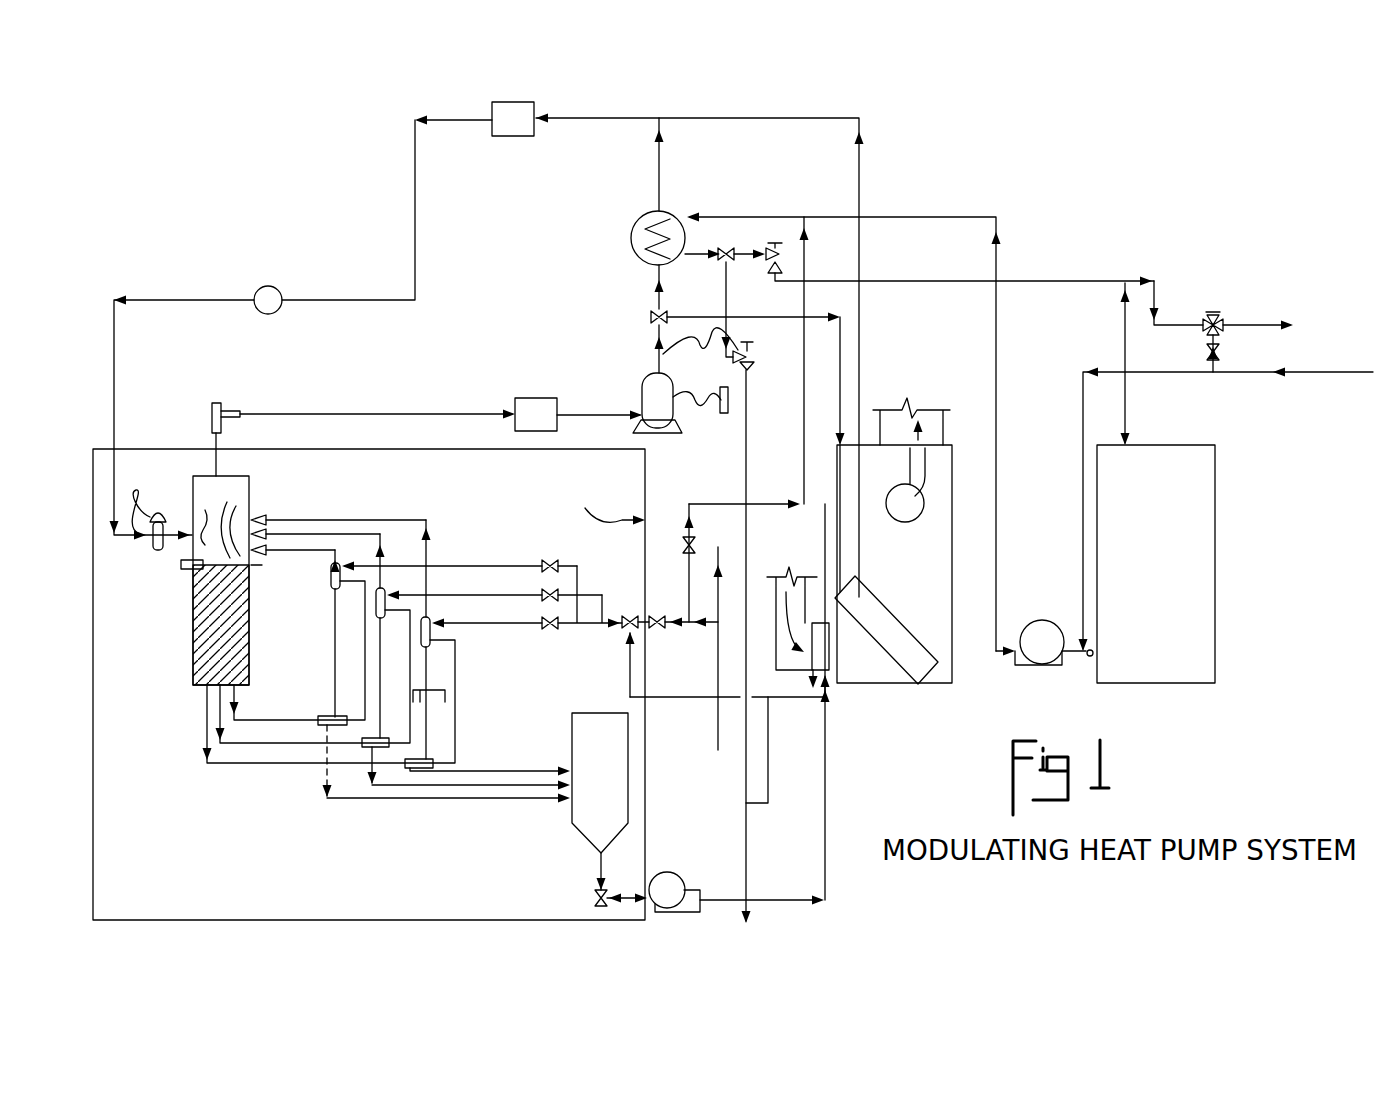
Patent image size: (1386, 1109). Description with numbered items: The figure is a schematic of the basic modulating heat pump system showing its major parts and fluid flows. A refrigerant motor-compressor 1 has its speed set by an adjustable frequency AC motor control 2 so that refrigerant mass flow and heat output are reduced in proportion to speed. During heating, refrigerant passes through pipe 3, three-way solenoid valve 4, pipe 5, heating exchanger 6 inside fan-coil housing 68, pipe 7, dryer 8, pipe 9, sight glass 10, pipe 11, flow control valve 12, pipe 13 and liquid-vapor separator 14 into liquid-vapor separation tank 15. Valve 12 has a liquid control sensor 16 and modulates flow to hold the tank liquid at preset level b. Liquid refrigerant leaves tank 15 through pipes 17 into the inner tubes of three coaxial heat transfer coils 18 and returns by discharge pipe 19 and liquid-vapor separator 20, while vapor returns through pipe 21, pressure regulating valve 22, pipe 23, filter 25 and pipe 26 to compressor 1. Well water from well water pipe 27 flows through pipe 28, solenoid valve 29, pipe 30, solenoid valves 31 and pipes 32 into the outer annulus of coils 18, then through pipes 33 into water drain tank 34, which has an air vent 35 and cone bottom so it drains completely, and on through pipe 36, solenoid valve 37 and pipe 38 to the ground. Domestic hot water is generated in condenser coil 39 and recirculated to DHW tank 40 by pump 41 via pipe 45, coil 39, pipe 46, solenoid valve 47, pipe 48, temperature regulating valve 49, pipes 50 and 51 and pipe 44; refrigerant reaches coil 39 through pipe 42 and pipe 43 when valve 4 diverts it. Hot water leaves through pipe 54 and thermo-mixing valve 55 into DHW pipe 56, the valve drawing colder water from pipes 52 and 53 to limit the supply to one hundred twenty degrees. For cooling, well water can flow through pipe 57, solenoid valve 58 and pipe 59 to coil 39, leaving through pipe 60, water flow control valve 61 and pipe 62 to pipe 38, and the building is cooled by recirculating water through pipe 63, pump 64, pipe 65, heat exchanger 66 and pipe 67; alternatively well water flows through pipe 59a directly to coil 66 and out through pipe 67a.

The refrigerant motor-compressor 1 is at (641, 380).
The adjustable frequency AC motor control 2 is at (724, 414).
The pipe 3 is at (657, 357).
The three-way solenoid valve 4 is at (651, 312).
The pipe 5 is at (770, 317).
The heating exchanger 6 is at (888, 606).
The pipe 7 is at (616, 118).
The dryer 8 is at (505, 102).
The pipe 9 is at (460, 118).
The sight glass 10 is at (275, 287).
The pipe 11 is at (186, 300).
The flow control valve 12 is at (158, 505).
The pipe 13 is at (179, 524).
The liquid-vapor separator 14 is at (211, 522).
The liquid-vapor separation tank 15 is at (251, 615).
The liquid control sensor 16 is at (188, 570).
The pipes 17 is at (310, 763).
The coaxial heat transfer coils 18 is at (410, 678).
The discharge pipe 19 is at (304, 533).
The liquid-vapor separator 20 is at (226, 512).
The pipe 21 is at (222, 465).
The pressure regulating valve 22 is at (216, 403).
The pipe 23 is at (372, 414).
The filter 25 is at (545, 398).
The pipe 26 is at (606, 415).
The well water pipe 27 is at (716, 735).
The pipe 28 is at (702, 630).
The solenoid valve 29 is at (658, 630).
The pipe 30 is at (632, 614).
The solenoid valves 31 is at (580, 630).
The pipes 32 is at (540, 623).
The pipes 33 is at (525, 771).
The water drain tank 34 is at (572, 830).
The air vent 35 is at (588, 713).
The pipe 36 is at (592, 888).
The solenoid valve 37 is at (612, 892).
The pipe 38 is at (500, 918).
The condenser coil 39 is at (633, 230).
The DHW tank 40 is at (1216, 605).
The pump 41 is at (1036, 668).
The pipe 42 is at (655, 292).
The pipe 43 is at (656, 158).
The pipe 44 is at (1088, 658).
The pipe 45 is at (760, 217).
The pipe 46 is at (718, 256).
The solenoid valve 47 is at (724, 262).
The pipe 48 is at (775, 275).
The temperature regulating valve 49 is at (786, 252).
The pipe 50 is at (900, 281).
The pipe 51 is at (1122, 332).
The pipe 52 is at (1168, 372).
The pipe 53 is at (1218, 368).
The pipe 54 is at (1203, 324).
The thermo-mixing valve 55 is at (1210, 312).
The DHW pipe 56 is at (1220, 320).
The pipe 57 is at (689, 588).
The solenoid valve 58 is at (698, 545).
The pipe 59 is at (748, 505).
The pipe 59a is at (824, 522).
The pipe 60 is at (726, 300).
The water flow control valve 61 is at (755, 358).
The pipe 62 is at (750, 440).
The pipe 63 is at (640, 896).
The pump 64 is at (688, 875).
The pipe 65 is at (768, 880).
The heat exchanger 66 is at (830, 648).
The pipe 67 is at (772, 705).
The pipe 67a is at (770, 775).
The fan-coil housing 68 is at (952, 556).
The preset liquid level b is at (267, 567).